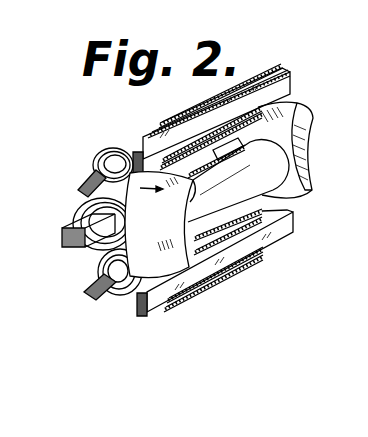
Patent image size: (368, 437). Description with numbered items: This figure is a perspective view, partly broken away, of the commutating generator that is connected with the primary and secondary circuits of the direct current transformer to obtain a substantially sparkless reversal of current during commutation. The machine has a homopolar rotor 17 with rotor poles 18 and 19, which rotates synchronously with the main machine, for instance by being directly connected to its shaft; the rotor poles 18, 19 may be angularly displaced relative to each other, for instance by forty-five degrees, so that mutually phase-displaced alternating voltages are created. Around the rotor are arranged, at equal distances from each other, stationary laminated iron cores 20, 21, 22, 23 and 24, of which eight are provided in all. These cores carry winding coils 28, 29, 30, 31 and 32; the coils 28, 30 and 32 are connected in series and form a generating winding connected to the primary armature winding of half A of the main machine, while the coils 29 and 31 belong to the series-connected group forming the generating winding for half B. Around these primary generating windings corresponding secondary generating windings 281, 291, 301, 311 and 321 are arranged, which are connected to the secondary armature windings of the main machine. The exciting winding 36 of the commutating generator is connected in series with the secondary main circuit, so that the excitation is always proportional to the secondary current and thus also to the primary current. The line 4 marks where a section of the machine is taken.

The section line 4— 4 is at (366, 197).
The rotor 17 is at (298, 182).
The rotor pole 18 is at (181, 263).
The rotor pole 19 is at (291, 106).
The iron core 20 is at (140, 150).
The iron core 21 is at (85, 176).
The iron core 22 is at (62, 236).
The iron core 23 is at (87, 293).
The iron core 24 is at (143, 317).
The winding coil 28 is at (190, 120).
The upper rail 281 is at (222, 97).
The winding coil 29 is at (114, 148).
The coil core 291 is at (98, 157).
The winding coil 30 is at (82, 212).
The coil core 301 is at (85, 198).
The winding coil 31 is at (118, 291).
The coil core 311 is at (97, 263).
The winding coil 32 is at (263, 250).
The lower rail 321 is at (263, 259).
The exciting winding 36 is at (230, 157).